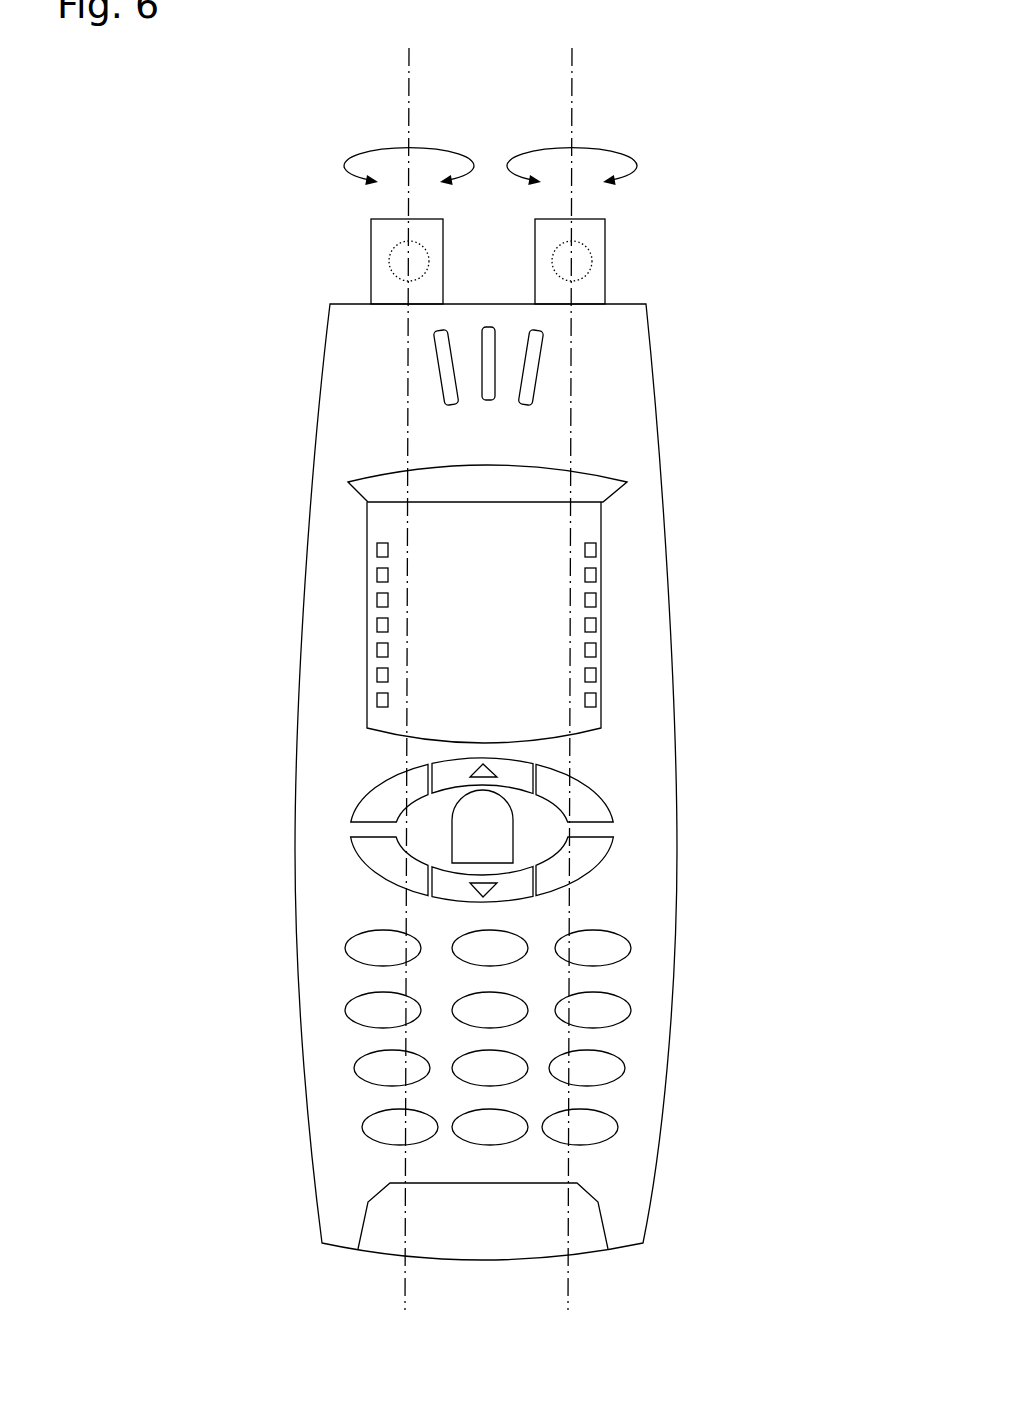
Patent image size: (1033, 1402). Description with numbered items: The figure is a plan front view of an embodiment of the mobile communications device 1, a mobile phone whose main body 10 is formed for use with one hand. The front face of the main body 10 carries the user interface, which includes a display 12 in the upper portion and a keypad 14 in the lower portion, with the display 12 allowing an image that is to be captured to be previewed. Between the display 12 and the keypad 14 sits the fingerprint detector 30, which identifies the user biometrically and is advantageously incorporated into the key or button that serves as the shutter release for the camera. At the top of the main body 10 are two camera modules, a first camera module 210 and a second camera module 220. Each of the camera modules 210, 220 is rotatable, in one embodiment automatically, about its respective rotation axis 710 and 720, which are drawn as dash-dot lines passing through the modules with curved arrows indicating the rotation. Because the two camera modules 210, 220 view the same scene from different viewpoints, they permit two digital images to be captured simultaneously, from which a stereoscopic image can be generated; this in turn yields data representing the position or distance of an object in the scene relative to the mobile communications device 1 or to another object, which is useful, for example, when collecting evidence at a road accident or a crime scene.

The mobile communications device 1 is at (268, 308).
The main body 10 is at (300, 615).
The display 12 is at (525, 605).
The keypad 14 is at (603, 928).
The fingerprint detector 30 is at (448, 832).
The first camera module 210 is at (371, 232).
The second camera module 220 is at (605, 232).
The rotation axis 710 is at (409, 125).
The rotation axis 720 is at (572, 122).